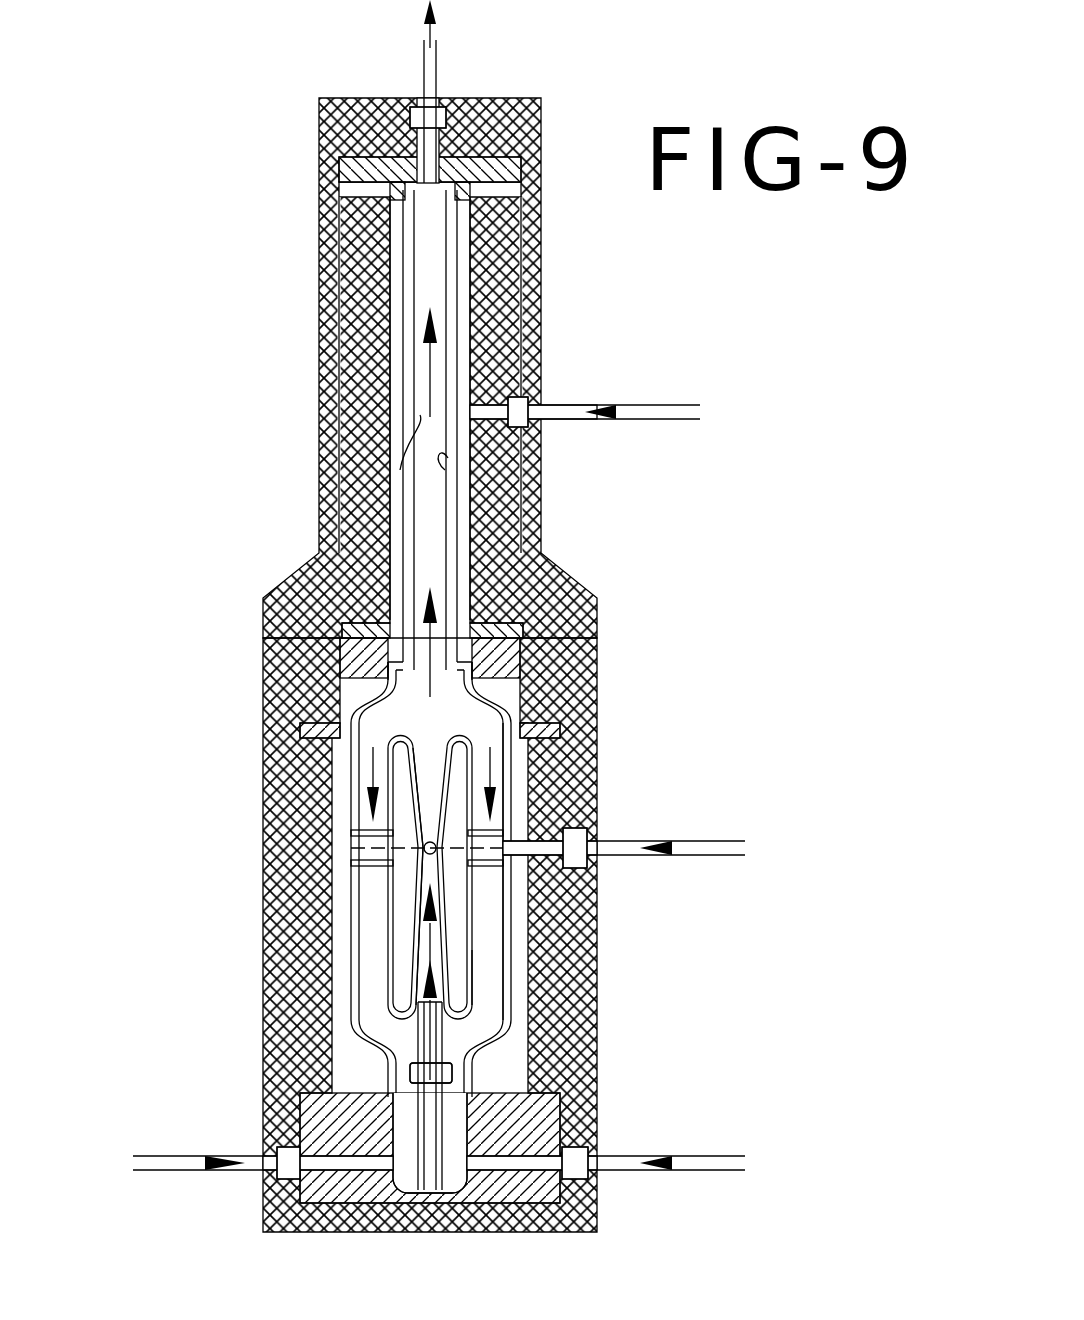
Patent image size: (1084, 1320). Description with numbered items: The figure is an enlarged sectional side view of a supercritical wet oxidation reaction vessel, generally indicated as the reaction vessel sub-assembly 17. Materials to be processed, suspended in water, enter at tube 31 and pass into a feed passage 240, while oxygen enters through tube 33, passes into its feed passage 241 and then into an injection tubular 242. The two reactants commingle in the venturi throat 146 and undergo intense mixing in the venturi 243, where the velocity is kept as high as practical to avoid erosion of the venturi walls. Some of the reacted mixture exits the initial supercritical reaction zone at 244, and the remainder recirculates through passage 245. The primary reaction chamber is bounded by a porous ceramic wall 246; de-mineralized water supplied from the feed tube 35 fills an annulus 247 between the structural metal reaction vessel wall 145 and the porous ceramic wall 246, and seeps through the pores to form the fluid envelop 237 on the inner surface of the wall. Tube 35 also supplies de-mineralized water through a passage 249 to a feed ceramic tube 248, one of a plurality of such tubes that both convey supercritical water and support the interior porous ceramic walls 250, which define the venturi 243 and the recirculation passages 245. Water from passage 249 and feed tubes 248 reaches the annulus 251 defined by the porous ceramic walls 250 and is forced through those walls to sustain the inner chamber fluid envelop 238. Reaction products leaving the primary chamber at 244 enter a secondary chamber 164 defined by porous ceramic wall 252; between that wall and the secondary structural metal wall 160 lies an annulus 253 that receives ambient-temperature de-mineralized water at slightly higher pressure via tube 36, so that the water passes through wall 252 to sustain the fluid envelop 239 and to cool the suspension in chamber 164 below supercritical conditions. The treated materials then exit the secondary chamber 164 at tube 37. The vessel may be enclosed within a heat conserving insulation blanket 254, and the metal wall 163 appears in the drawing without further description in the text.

The supercritical reaction vessel 17 is at (802, 440).
The tube 31 is at (238, 1156).
The tube 33 is at (630, 1172).
The feed tube 35 is at (622, 858).
The tube 36 is at (567, 420).
The tube 37 is at (420, 78).
The structural metal reaction vessel wall 145 is at (362, 855).
The venturi throat 146 is at (484, 1040).
The secondary structural metal wall 160 is at (410, 418).
The housing wall 163 is at (512, 360).
The secondary chamber 164 is at (424, 314).
The fluid envelop 237 is at (437, 838).
The fluid envelop 238 is at (356, 690).
The fluid envelop 239 is at (400, 470).
The feed passage 240 is at (400, 1072).
The feed passage 241 is at (450, 1140).
The injection tubular 242 is at (462, 1112).
The venturi 243 is at (497, 802).
The exit of initial supercritical reaction zone 244 is at (436, 662).
The recirculation passage 245 is at (480, 703).
The porous ceramic wall 246 is at (348, 718).
The annulus 247 is at (345, 780).
The feed ceramic tube 248 is at (355, 832).
The passage 249 is at (460, 836).
The porous ceramic walls 250 is at (410, 900).
The annulus 251 is at (400, 872).
The porous ceramic wall 252 is at (404, 252).
The annulus 253 is at (392, 530).
The heat conserving insulation blanket 254 is at (537, 100).